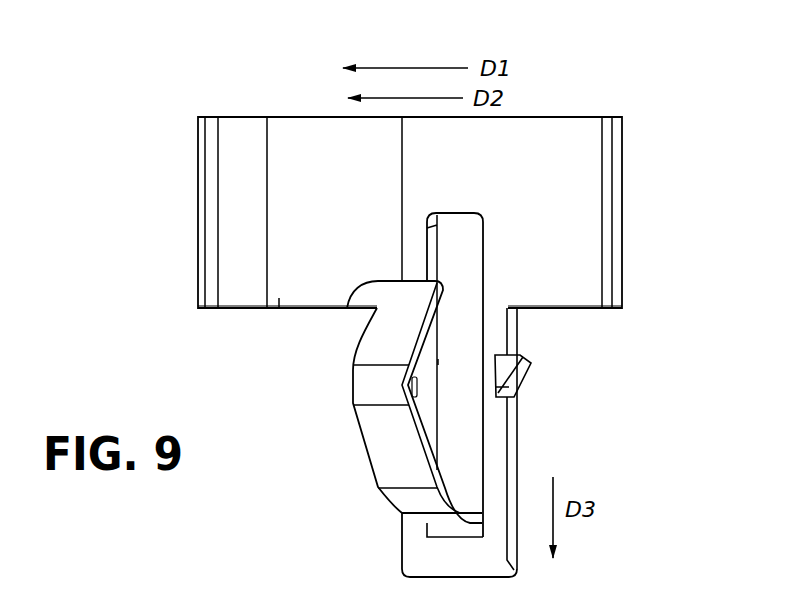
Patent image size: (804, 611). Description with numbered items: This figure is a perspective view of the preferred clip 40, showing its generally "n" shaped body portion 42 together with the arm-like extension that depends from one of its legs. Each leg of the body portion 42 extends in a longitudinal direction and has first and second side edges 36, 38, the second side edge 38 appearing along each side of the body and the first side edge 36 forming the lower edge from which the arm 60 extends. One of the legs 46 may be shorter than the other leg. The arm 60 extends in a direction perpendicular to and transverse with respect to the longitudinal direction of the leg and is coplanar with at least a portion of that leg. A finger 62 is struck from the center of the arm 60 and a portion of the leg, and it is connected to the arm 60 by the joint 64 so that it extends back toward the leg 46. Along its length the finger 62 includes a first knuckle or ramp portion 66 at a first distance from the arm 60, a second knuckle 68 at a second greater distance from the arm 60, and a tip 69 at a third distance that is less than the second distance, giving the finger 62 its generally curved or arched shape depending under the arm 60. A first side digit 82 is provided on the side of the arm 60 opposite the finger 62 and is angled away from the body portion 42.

The clip 40 is at (207, 95).
The second side edge 38 is at (287, 117).
The body portion 42 is at (183, 258).
The leg 46 is at (279, 300).
The first side edge 36 is at (297, 310).
The tip 69 is at (360, 300).
The arm 60 is at (527, 433).
The first side digit 82 is at (525, 372).
The finger 62 is at (350, 453).
The second knuckle 68 is at (357, 388).
The first knuckle or ramp portion 66 is at (387, 498).
The joint 64 is at (422, 515).